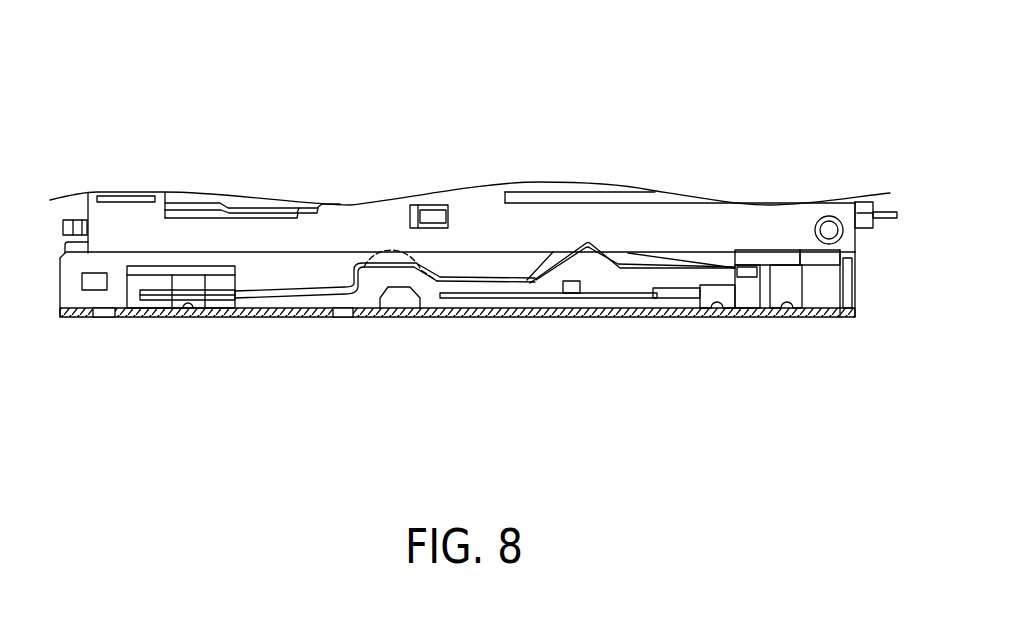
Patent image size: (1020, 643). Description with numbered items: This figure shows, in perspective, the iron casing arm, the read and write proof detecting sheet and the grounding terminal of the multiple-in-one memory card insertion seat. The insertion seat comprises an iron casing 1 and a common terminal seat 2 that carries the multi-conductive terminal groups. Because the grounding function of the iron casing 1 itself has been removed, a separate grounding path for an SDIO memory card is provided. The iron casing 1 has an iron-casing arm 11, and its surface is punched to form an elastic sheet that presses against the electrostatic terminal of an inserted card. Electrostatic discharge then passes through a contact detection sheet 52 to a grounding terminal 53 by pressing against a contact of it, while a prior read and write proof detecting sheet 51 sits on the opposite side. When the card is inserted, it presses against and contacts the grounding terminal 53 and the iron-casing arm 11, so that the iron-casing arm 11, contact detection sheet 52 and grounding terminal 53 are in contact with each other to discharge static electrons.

The iron casing 1 is at (153, 317).
The common terminal seat 2 is at (470, 210).
The iron-casing arm 11 is at (433, 308).
The read and write proof detecting sheet 51 is at (332, 300).
The contact detection sheet 52 is at (560, 270).
The grounding terminal 53 is at (493, 298).